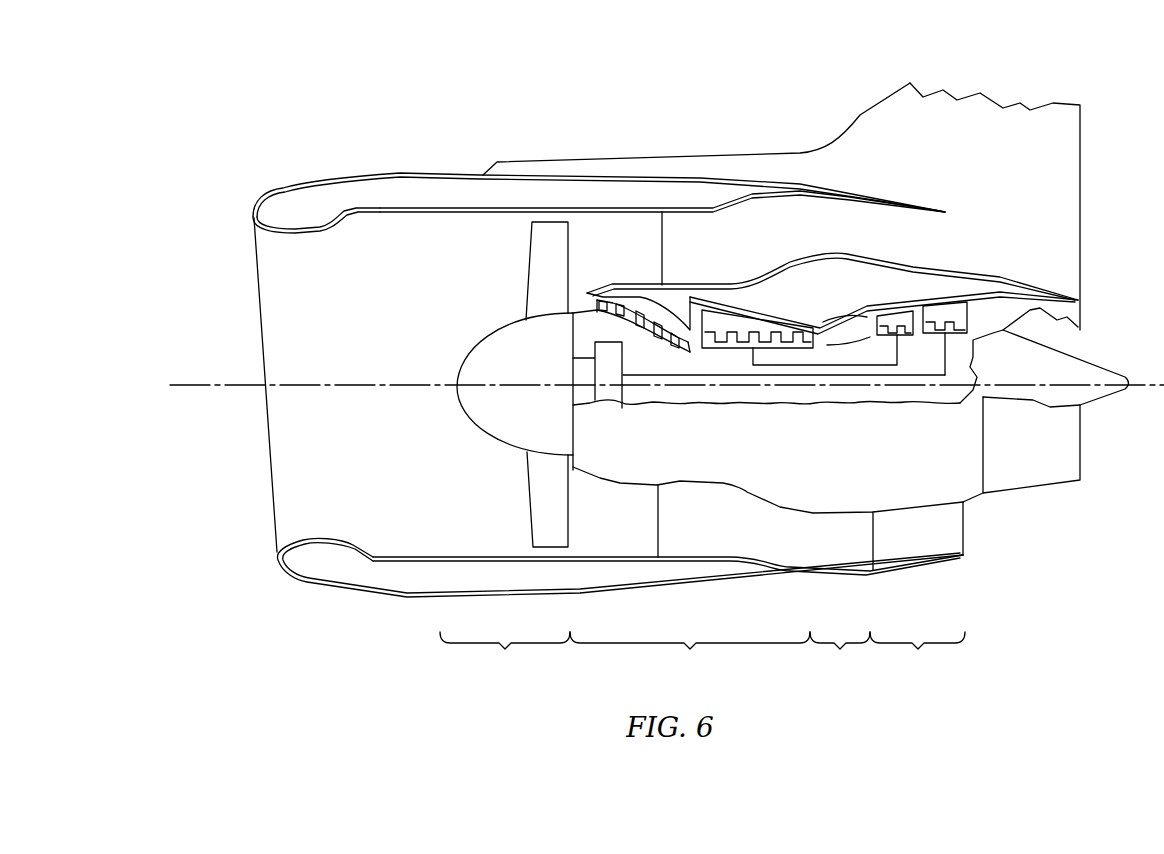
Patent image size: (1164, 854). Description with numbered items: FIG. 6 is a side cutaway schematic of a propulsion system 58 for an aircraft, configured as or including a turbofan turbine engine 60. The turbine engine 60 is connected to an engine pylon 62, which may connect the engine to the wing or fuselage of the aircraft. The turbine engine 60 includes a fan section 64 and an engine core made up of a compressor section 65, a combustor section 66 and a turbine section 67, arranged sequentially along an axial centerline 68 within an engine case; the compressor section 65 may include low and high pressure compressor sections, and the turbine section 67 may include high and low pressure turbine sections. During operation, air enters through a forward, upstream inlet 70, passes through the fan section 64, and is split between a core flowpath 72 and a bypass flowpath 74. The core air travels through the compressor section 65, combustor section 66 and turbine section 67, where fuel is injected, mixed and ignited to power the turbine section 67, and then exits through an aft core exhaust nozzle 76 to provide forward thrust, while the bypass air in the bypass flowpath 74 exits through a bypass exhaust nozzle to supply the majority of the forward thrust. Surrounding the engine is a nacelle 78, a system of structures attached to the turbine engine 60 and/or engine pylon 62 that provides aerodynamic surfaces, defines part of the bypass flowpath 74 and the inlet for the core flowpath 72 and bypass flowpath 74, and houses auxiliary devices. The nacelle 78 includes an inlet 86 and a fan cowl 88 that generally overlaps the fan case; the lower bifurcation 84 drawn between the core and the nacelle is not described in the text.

The propulsion system 58 is at (247, 118).
The turbofan turbine engine 60 is at (497, 503).
The engine pylon 62 is at (1073, 143).
The fan section 64 is at (505, 654).
The compressor section 65 is at (690, 654).
The combustor section 66 is at (840, 654).
The turbine section 67 is at (917, 654).
The axial centerline 68 is at (1147, 383).
The inlet 70 is at (253, 310).
The core flowpath 72 is at (587, 299).
The bypass flowpath 74 is at (640, 227).
The core exhaust nozzle 76 is at (1080, 312).
The nacelle 78 is at (397, 170).
The lower bifurcation 84 is at (658, 538).
The inlet 86 is at (287, 190).
The fan cowl 88 is at (540, 170).